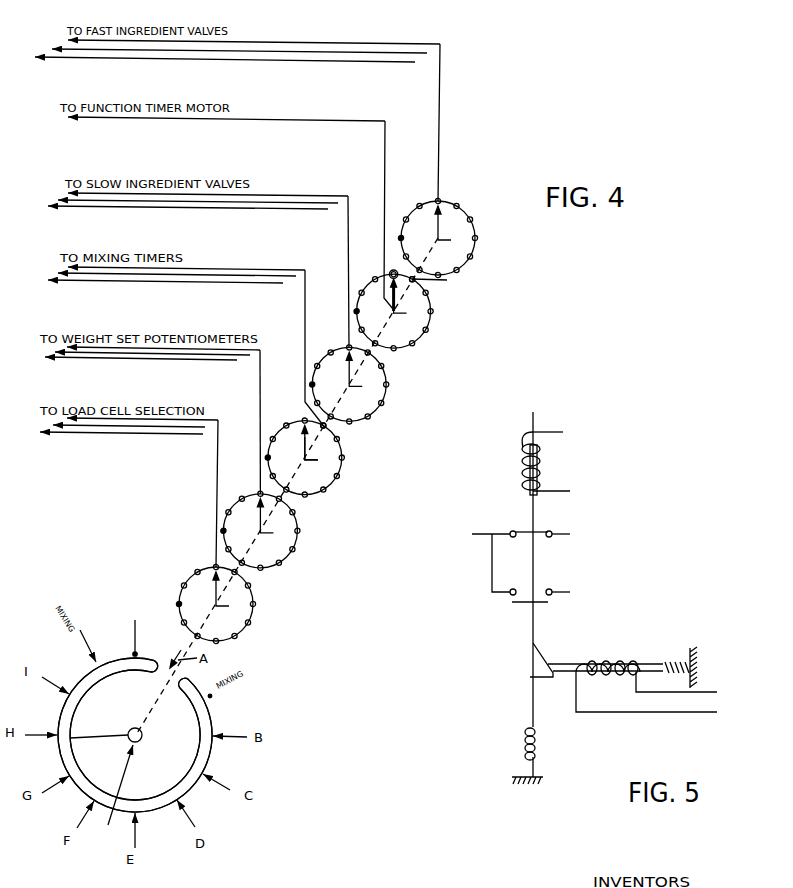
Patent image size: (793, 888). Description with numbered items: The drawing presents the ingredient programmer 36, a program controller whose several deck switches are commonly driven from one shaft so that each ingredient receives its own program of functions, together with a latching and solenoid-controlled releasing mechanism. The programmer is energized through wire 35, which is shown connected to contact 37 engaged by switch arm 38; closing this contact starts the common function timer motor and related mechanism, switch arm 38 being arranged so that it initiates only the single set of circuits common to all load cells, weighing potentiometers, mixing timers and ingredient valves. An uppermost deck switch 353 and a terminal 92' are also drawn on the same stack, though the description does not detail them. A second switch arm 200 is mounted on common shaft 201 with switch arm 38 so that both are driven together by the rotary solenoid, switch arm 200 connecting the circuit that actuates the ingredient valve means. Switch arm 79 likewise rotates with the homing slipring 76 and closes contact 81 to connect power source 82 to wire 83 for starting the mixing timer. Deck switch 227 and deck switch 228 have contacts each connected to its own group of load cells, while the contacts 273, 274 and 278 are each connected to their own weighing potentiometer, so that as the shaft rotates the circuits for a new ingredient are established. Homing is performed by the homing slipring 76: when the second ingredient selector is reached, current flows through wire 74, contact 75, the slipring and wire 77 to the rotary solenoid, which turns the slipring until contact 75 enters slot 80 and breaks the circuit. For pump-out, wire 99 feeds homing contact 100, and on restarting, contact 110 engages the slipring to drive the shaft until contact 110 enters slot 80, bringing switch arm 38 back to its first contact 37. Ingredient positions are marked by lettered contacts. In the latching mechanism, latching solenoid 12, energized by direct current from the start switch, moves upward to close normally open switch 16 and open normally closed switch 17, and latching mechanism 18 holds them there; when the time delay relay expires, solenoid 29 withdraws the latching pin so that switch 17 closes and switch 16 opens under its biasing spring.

In FIG. 4, the ingredient programmer 36 is at (292, 748).
In FIG. 4, the fast ingredient valve selector switch 353 is at (440, 226).
In FIG. 4, the switch arm 38 is at (398, 300).
In FIG. 4, the contact 37 is at (390, 272).
In FIG. 4, the wire 35 is at (410, 278).
In FIG. 4, the terminal 92' is at (442, 290).
In FIG. 4, the second switch arm 200 is at (350, 372).
In FIG. 4, the wire 83 is at (305, 338).
In FIG. 4, the switch arm 79 is at (307, 448).
In FIG. 4, the contact 81 is at (325, 426).
In FIG. 4, the power source 82 is at (316, 460).
In FIG. 4, the common shaft 201 is at (228, 547).
In FIG. 4, the deck switch contact 273 is at (261, 511).
In FIG. 4, the deck switch contact 274 is at (326, 539).
In FIG. 4, the deck switch contact 278 is at (326, 552).
In FIG. 4, the deck switch 227 is at (217, 589).
In FIG. 4, the deck switch 228 is at (276, 642).
In FIG. 4, the wire 99 is at (136, 630).
In FIG. 4, the homing contact 100 is at (133, 653).
In FIG. 4, the contact 110 is at (172, 663).
In FIG. 4, the homing slipring 76 is at (203, 738).
In FIG. 4, the slot 80 is at (158, 678).
In FIG. 4, the wire 77 is at (118, 792).
In FIG. 4, the contact 75 is at (212, 696).
In FIG. 4, the wire 74 is at (213, 694).
In FIG. 5, the latching solenoid 12 is at (521, 461).
In FIG. 5, the normally closed switch 17 is at (553, 531).
In FIG. 5, the normally open switch 16 is at (510, 595).
In FIG. 5, the latching mechanism 18 is at (540, 662).
In FIG. 5, the solenoid 29 is at (596, 662).